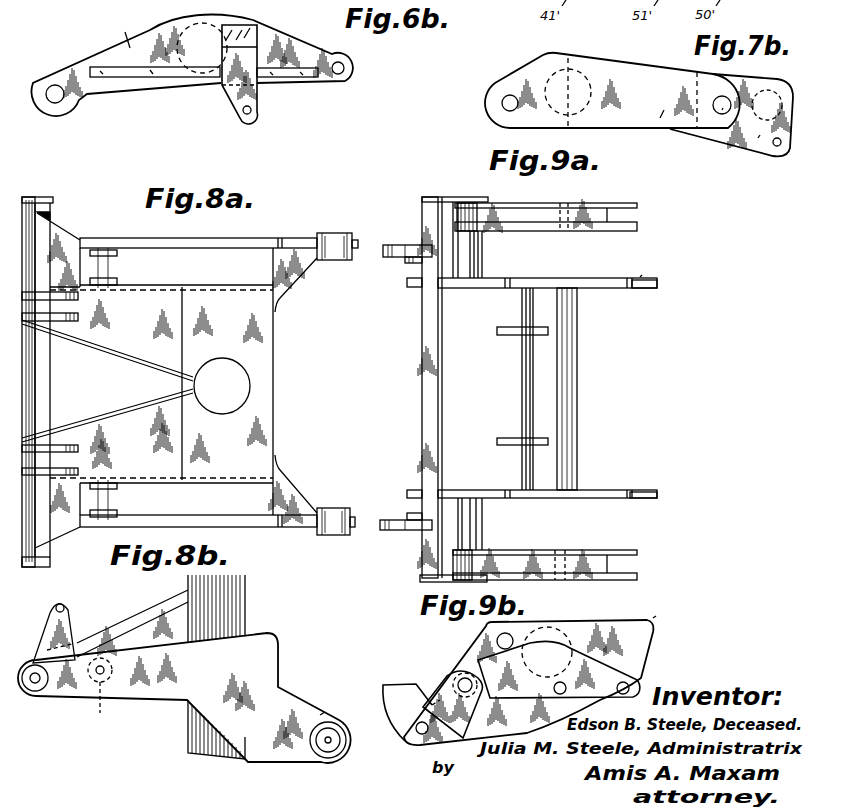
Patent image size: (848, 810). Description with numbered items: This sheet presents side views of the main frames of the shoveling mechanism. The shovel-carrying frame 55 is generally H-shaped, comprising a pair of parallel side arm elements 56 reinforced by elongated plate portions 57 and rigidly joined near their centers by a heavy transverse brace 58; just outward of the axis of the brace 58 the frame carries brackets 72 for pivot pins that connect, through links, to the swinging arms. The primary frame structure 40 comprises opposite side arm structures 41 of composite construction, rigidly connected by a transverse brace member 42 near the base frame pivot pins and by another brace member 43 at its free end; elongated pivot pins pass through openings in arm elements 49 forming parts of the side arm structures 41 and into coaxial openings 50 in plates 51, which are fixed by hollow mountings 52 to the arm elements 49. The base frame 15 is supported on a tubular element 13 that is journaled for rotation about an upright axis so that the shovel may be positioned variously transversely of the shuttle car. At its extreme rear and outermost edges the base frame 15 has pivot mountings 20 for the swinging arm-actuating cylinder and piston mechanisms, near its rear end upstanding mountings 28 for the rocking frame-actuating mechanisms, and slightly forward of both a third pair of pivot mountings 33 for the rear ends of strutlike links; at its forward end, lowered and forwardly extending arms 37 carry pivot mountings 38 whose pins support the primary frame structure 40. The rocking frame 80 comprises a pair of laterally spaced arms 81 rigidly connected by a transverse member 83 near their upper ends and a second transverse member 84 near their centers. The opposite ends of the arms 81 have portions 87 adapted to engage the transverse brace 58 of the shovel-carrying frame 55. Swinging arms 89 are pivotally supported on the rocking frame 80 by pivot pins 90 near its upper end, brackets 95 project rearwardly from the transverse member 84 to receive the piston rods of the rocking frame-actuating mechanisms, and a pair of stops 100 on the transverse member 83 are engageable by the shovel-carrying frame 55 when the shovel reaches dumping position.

In FIG. 6B, the shovel-carrying frame 55 is at (150, 26).
In FIG. 6B, the parallel side arm elements 56 is at (130, 48).
In FIG. 6B, the elongated plate portions 57 is at (142, 73).
In FIG. 6B, the transverse brace 58 is at (208, 72).
In FIG. 6B, the brackets 72 is at (250, 88).
In FIG. 7B, the primary frame structure 40 is at (517, 66).
In FIG. 7B, the side arm structures 41 is at (647, 68).
In FIG. 7B, the transverse brace member 42 is at (603, 65).
In FIG. 7B, the transverse brace member 43 is at (773, 86).
In FIG. 7B, the arm elements 49 is at (758, 138).
In FIG. 7B, the coaxial openings 50 is at (722, 110).
In FIG. 7B, the plates 51 is at (663, 115).
In FIG. 7B, the hollow mountings 52 is at (598, 0).
In FIG. 8A, the pivot mountings 20 is at (52, 200).
In FIG. 8B, the pivot mountings 20 is at (28, 694).
In FIG. 8A, the base frame 15 is at (277, 238).
In FIG. 8B, the base frame 15 is at (290, 641).
In FIG. 8A, the pivot mountings 33 is at (108, 278).
In FIG. 8B, the pivot mountings 33 is at (100, 693).
In FIG. 8A, the upstanding mountings 28 is at (80, 316).
In FIG. 8B, the upstanding mountings 28 is at (72, 625).
In FIG. 8A, the tubular element 13 is at (242, 370).
In FIG. 8B, the tubular element 13 is at (245, 598).
In FIG. 8A, the lowered and forwardly extending arms 37 is at (310, 238).
In FIG. 8B, the lowered and forwardly extending arms 37 is at (320, 715).
In FIG. 8A, the pivot mountings 38 is at (350, 233).
In FIG. 8B, the pivot mountings 38 is at (330, 744).
In FIG. 9A, the transverse member 83 is at (425, 422).
In FIG. 9A, the swinging arms 89 is at (587, 203).
In FIG. 9B, the swinging arms 89 is at (479, 660).
In FIG. 9A, the stops 100 is at (395, 245).
In FIG. 9B, the stops 100 is at (397, 683).
In FIG. 9A, the arms 81 is at (608, 278).
In FIG. 9A, the rocking frame 80 is at (649, 276).
In FIG. 9B, the rocking frame 80 is at (607, 619).
In FIG. 9A, the portions 87 is at (660, 283).
In FIG. 9B, the portions 87 is at (653, 620).
In FIG. 9A, the brackets 95 is at (508, 333).
In FIG. 9A, the transverse member 84 is at (577, 420).
In FIG. 9B, the pivot pins 90 is at (455, 680).